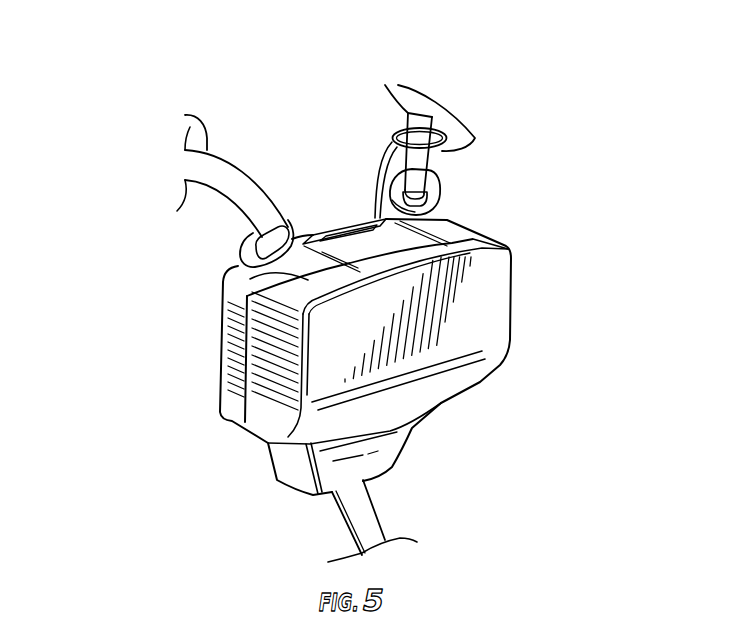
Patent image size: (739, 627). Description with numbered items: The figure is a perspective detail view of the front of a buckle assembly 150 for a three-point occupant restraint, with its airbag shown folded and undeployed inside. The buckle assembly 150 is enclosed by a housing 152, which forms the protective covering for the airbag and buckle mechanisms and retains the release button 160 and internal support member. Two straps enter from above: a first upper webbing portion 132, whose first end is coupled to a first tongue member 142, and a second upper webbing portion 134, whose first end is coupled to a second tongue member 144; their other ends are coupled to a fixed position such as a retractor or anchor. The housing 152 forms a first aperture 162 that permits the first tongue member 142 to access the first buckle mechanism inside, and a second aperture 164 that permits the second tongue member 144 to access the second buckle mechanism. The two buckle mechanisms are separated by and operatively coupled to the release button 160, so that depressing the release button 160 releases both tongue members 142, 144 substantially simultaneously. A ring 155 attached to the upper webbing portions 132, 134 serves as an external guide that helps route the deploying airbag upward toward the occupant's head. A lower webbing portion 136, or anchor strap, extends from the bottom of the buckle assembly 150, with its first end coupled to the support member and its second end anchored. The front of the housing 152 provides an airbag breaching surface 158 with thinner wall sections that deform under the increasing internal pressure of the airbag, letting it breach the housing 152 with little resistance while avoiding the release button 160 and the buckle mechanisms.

The first upper webbing portion 132 is at (185, 115).
The second upper webbing portion 134 is at (448, 147).
The lower webbing portion 136 is at (338, 519).
The first tongue member 142 is at (292, 227).
The second tongue member 144 is at (441, 183).
The buckle assembly 150 is at (489, 410).
The housing 152 is at (223, 402).
The ring 155 is at (393, 138).
The airbag breaching surface 158 is at (301, 244).
The release button 160 is at (333, 236).
The first aperture 162 is at (210, 251).
The second aperture 164 is at (458, 197).